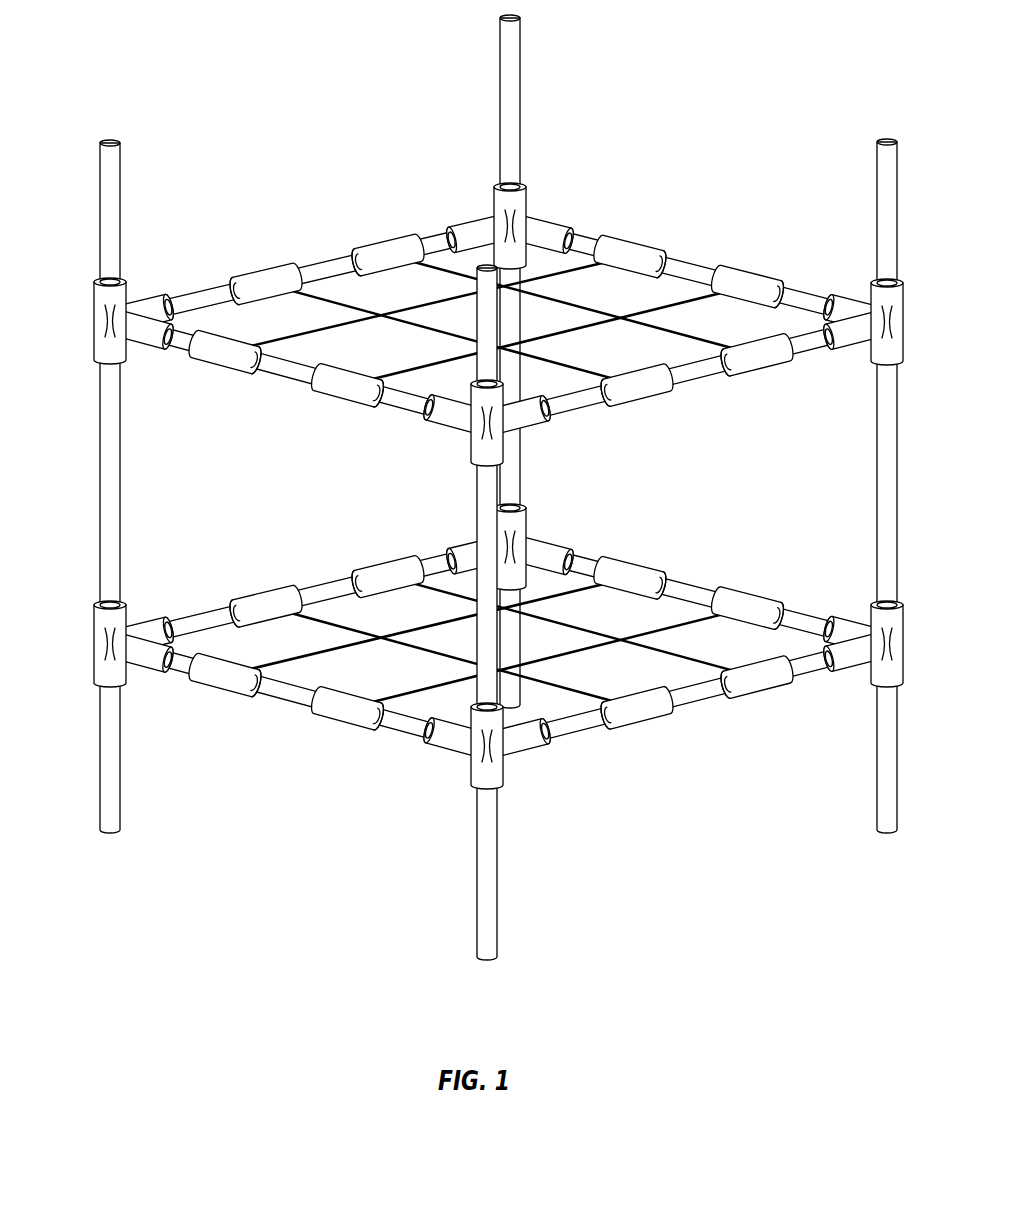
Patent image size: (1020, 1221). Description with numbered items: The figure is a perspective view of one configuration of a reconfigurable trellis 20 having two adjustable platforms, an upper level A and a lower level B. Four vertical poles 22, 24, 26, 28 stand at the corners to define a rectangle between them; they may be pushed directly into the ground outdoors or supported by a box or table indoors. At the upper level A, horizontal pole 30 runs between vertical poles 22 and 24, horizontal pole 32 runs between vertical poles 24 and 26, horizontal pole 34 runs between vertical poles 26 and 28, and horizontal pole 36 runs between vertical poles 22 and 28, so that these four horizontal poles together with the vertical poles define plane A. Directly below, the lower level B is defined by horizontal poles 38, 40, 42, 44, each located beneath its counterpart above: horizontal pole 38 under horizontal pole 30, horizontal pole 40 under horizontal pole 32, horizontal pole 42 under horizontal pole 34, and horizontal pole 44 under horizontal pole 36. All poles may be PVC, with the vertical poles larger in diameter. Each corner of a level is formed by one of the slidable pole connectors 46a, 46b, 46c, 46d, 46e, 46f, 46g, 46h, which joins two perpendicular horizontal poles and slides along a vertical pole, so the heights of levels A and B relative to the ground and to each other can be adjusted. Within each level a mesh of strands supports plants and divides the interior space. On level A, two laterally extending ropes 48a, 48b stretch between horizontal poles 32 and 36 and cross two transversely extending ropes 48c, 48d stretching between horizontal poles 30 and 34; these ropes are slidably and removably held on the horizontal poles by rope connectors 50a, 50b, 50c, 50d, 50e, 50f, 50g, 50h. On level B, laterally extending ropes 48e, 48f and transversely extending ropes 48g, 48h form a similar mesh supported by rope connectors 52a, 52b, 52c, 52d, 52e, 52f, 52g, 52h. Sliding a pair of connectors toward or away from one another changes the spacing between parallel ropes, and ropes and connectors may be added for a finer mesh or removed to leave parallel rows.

The trellis 20 is at (115, 67).
The vertical pole 22 is at (100, 534).
The vertical pole 24 is at (520, 110).
The vertical pole 26 is at (897, 449).
The vertical pole 28 is at (480, 686).
The horizontal pole 30 is at (205, 281).
The horizontal pole 32 is at (800, 292).
The horizontal pole 34 is at (689, 382).
The horizontal pole 36 is at (298, 387).
The horizontal pole 38 is at (326, 586).
The horizontal pole 40 is at (690, 588).
The horizontal pole 42 is at (573, 735).
The horizontal pole 44 is at (281, 707).
The slidable pole connector 46a is at (100, 330).
The slidable pole connector 46b is at (528, 225).
The slidable pole connector 46c is at (897, 328).
The slidable pole connector 46d is at (470, 434).
The slidable pole connector 46e is at (100, 660).
The slidable pole connector 46f is at (528, 546).
The slidable pole connector 46g is at (897, 651).
The slidable pole connector 46h is at (513, 762).
The rope 48a is at (410, 313).
The rope 48b is at (575, 334).
The rope 48c is at (413, 327).
The rope 48d is at (572, 312).
The rope 48e is at (418, 640).
The rope 48f is at (583, 656).
The rope 48g is at (416, 651).
The rope 48h is at (618, 642).
The rope connector 50a is at (251, 272).
The rope connector 50b is at (398, 246).
The rope connector 50c is at (633, 241).
The rope connector 50d is at (759, 275).
The rope connector 50e is at (766, 358).
The rope connector 50f is at (655, 397).
The rope connector 50g is at (351, 389).
The rope connector 50h is at (224, 369).
The rope connector 52a is at (265, 598).
The rope connector 52b is at (379, 572).
The rope connector 52c is at (629, 565).
The rope connector 52d is at (752, 597).
The rope connector 52e is at (765, 688).
The rope connector 52f is at (637, 719).
The rope connector 52g is at (352, 720).
The rope connector 52h is at (228, 689).
The level A is at (350, 206).
The level B is at (628, 740).